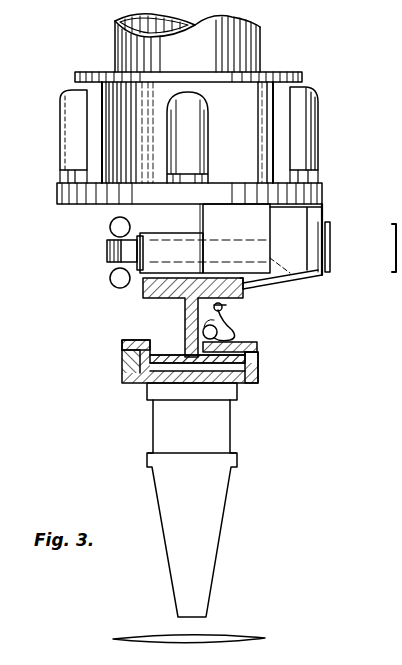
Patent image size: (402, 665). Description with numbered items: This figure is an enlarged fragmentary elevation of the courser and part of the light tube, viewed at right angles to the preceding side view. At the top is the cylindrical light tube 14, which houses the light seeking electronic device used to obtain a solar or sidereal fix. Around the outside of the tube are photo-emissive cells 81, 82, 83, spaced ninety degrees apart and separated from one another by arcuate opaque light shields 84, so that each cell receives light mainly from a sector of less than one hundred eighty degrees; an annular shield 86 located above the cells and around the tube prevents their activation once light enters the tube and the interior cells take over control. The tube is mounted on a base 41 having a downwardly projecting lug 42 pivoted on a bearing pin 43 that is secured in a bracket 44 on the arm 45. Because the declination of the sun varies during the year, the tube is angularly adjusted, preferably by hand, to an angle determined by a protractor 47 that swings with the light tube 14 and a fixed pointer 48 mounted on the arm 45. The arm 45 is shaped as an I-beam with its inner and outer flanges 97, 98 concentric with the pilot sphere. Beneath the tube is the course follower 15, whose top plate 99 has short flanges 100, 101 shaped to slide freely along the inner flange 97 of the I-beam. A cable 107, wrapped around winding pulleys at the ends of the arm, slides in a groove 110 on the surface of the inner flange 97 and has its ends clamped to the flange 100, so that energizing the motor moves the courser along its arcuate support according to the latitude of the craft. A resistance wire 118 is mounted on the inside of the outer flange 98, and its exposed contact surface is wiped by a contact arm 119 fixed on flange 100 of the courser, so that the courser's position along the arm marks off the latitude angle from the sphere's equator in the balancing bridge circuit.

The light tube 14 is at (187, 43).
The annular shield 86 is at (281, 72).
The arcuate opaque light shields 84 is at (285, 91).
The photo-emissive cell 83 is at (60, 117).
The photo-emissive cell 81 is at (318, 137).
The photo-emissive cell 82 is at (197, 124).
The base 41 is at (57, 200).
The lug 42 is at (235, 238).
The bracket 44 is at (168, 240).
The protractor 47 is at (327, 220).
The fixed pointer 48 is at (331, 243).
The bearing pin 43 is at (283, 283).
The outer flange 98 is at (138, 287).
The arm 45 is at (186, 311).
The top plate 99 is at (122, 368).
The flange 101 is at (122, 343).
The inner flange 97 is at (174, 358).
The flange 100 is at (258, 346).
The groove 110 is at (258, 363).
The resistance wire 118 is at (228, 306).
The cable 107 is at (238, 332).
The contact arm 119 is at (245, 322).
The course follower 15 is at (192, 500).